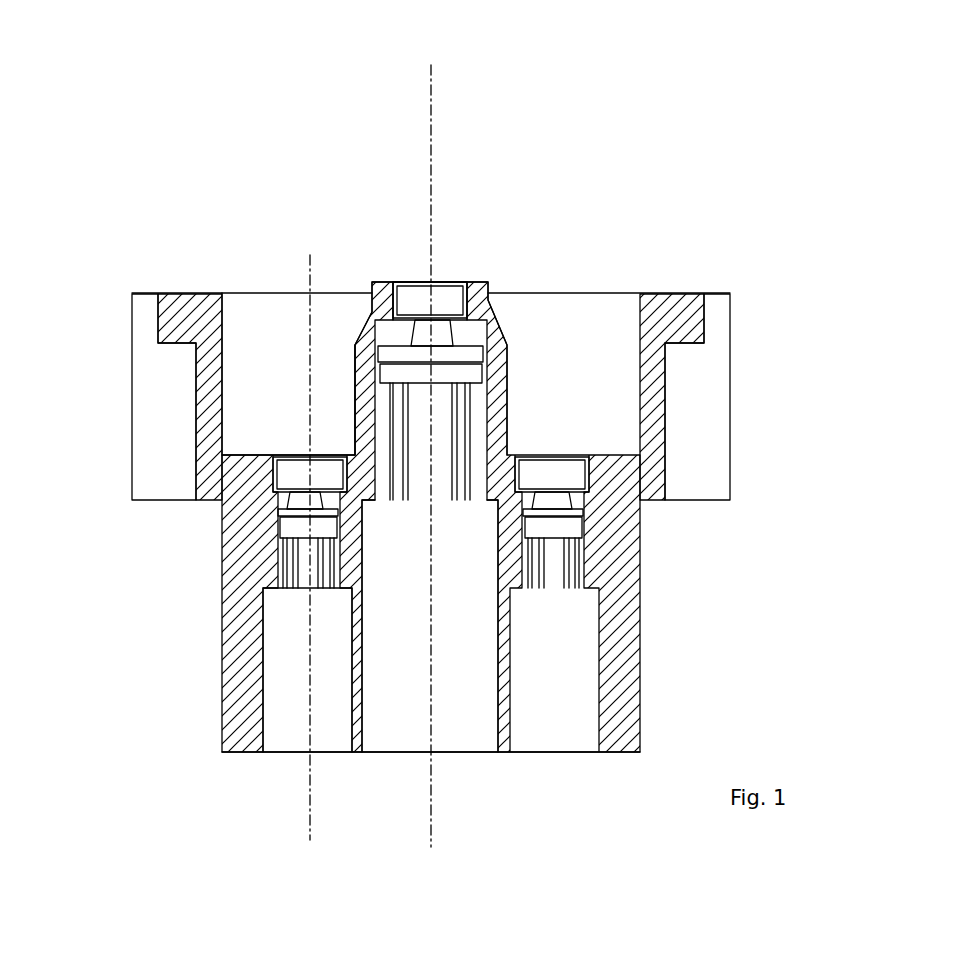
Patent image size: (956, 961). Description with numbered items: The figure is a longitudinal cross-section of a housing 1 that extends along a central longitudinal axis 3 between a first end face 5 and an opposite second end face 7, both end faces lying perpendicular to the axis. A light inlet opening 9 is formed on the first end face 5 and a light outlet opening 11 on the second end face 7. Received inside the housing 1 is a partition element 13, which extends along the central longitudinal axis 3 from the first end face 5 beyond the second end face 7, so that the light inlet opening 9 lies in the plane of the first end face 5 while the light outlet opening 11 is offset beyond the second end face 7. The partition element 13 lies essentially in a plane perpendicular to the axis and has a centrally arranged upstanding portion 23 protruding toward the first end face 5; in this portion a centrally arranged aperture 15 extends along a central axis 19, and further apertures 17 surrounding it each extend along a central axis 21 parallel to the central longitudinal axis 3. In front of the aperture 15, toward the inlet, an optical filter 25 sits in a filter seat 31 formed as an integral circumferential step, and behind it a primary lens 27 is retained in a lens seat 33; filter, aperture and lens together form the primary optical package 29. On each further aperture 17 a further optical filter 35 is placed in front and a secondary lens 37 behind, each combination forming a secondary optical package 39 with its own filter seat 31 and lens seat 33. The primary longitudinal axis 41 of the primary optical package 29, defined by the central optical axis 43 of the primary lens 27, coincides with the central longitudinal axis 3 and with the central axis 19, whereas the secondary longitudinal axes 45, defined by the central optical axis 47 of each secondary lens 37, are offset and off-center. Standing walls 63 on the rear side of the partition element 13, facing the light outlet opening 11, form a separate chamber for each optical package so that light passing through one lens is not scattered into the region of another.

The housing 1 is at (118, 294).
The central longitudinal axis 3 is at (483, 427).
The first end face 5 is at (366, 333).
The second end face 7 is at (703, 498).
The light inlet opening 9 is at (287, 245).
The light outlet opening 11 is at (376, 800).
The partition element 13 is at (182, 303).
The centrally arranged aperture 15 is at (554, 280).
The further apertures 17 is at (696, 464).
The central axis of the aperture 19 is at (483, 427).
The central axis of the further aperture 21 is at (218, 547).
The upstanding portion 23 is at (355, 370).
The optical filter 25 is at (445, 297).
The primary lens 27 is at (462, 373).
The primary optical package 29 is at (455, 342).
The filter seat 31 is at (443, 338).
The lens seat 33 is at (373, 370).
The further optical filter 35 is at (562, 463).
The secondary lens 37 is at (283, 527).
The secondary optical package 39 is at (562, 502).
The primary longitudinal axis 41 is at (483, 427).
The central optical axis of the primary lens 43 is at (431, 112).
The secondary longitudinal axis 45 is at (218, 547).
The central optical axis of the secondary lens 47 is at (307, 798).
The standing walls 63 is at (285, 665).